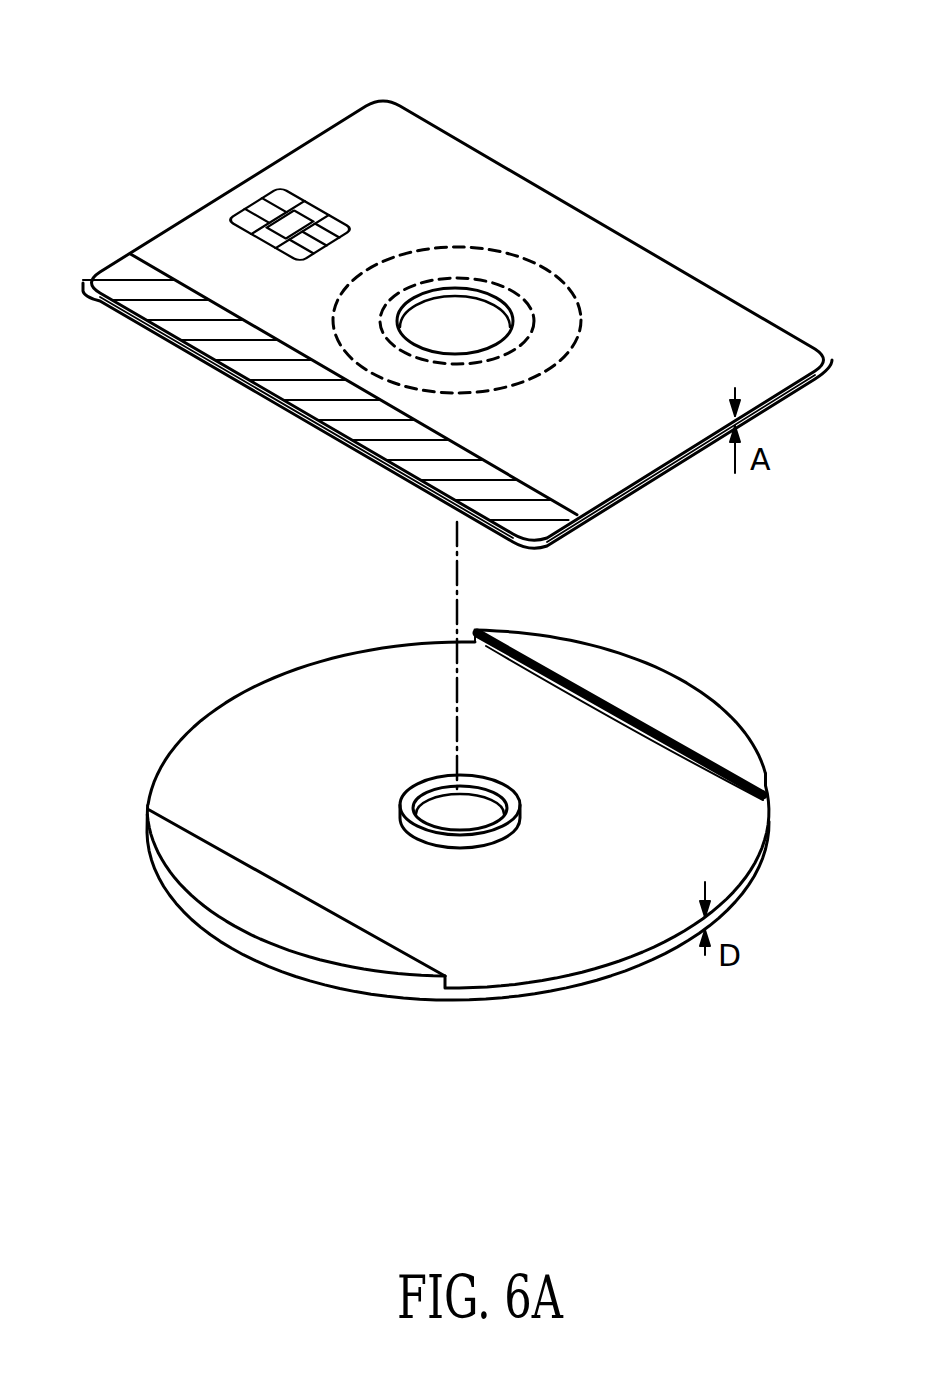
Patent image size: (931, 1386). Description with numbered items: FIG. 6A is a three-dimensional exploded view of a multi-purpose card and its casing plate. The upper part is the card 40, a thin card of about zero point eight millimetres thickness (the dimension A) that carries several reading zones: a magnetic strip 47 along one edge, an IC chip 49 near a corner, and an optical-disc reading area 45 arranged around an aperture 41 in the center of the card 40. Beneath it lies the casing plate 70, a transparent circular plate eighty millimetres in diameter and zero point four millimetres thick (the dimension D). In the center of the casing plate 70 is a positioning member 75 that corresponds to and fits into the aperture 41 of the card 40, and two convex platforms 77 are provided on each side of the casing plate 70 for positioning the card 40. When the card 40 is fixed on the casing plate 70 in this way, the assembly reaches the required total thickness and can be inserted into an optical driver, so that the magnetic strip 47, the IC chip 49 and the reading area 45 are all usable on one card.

The card 40 is at (327, 150).
The aperture 41 is at (455, 312).
The reading area 45 is at (528, 275).
The magnetic strip 47 is at (112, 268).
The IC chip 49 is at (255, 208).
The casing plate 70 is at (255, 715).
The positioning member 75 is at (410, 780).
The convex platforms 77 is at (698, 750).